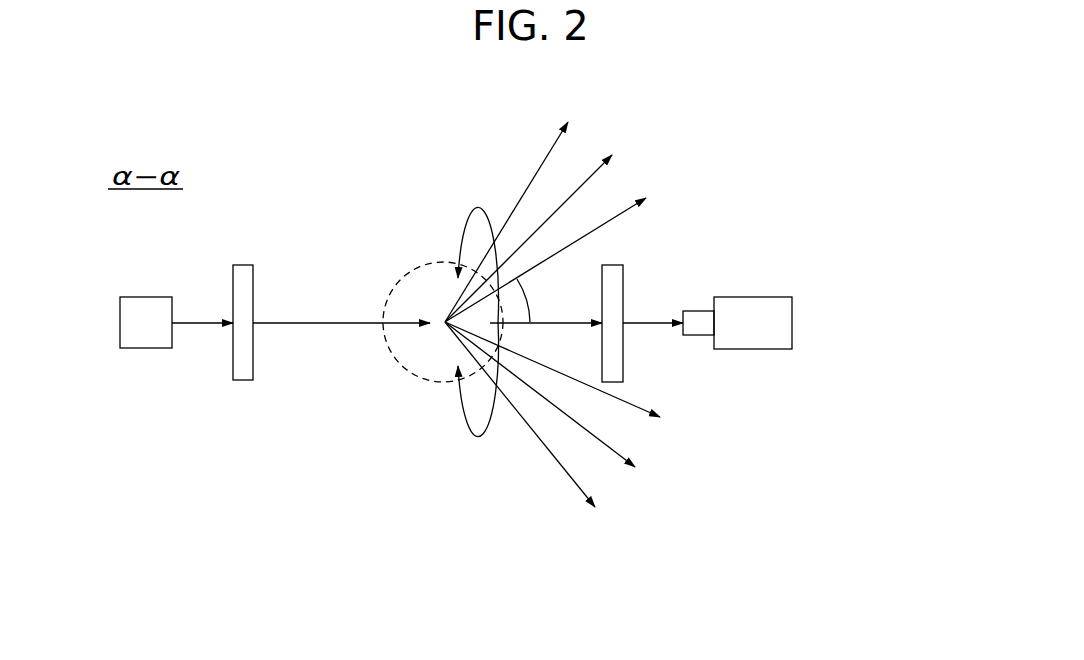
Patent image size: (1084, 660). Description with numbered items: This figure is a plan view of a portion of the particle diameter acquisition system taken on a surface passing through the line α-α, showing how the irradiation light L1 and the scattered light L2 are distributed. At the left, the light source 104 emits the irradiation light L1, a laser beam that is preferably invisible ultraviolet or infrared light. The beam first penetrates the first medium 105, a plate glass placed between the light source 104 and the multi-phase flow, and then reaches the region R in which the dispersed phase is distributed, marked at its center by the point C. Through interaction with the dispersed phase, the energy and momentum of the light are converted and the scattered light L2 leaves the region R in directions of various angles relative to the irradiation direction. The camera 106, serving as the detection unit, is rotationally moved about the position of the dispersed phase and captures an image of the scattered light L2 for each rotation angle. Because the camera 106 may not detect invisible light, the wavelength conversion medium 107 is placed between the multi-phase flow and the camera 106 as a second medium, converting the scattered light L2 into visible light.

The light source 104 is at (140, 332).
The first medium 105 is at (243, 367).
The camera 106 is at (753, 330).
The wavelength conversion medium 107 is at (613, 355).
The irradiation light L1 is at (318, 322).
The scattered light L2 is at (552, 314).
The region R is at (422, 265).
The center of region C is at (438, 332).